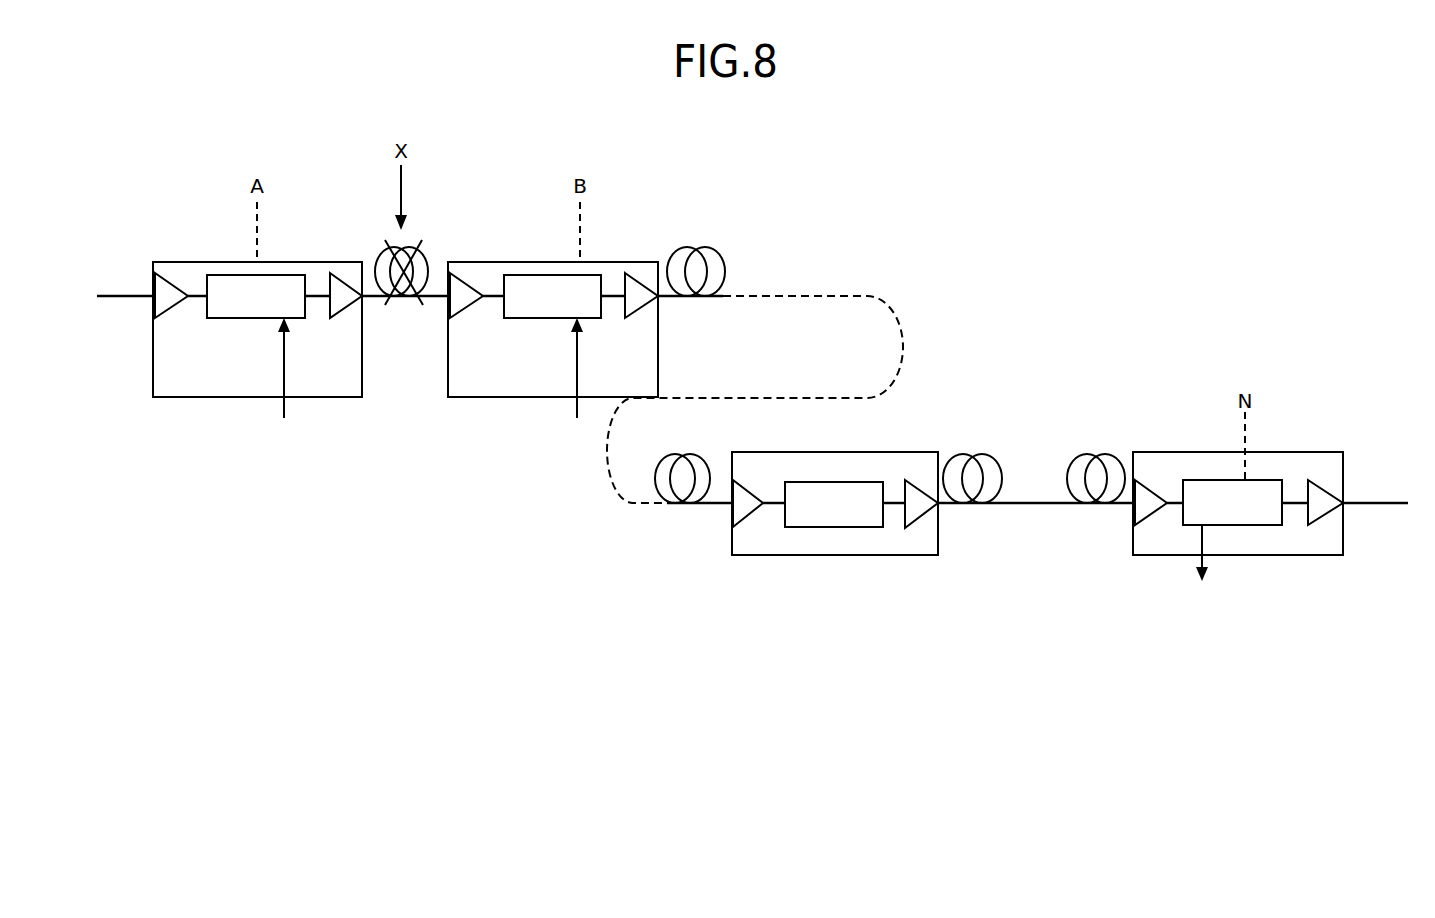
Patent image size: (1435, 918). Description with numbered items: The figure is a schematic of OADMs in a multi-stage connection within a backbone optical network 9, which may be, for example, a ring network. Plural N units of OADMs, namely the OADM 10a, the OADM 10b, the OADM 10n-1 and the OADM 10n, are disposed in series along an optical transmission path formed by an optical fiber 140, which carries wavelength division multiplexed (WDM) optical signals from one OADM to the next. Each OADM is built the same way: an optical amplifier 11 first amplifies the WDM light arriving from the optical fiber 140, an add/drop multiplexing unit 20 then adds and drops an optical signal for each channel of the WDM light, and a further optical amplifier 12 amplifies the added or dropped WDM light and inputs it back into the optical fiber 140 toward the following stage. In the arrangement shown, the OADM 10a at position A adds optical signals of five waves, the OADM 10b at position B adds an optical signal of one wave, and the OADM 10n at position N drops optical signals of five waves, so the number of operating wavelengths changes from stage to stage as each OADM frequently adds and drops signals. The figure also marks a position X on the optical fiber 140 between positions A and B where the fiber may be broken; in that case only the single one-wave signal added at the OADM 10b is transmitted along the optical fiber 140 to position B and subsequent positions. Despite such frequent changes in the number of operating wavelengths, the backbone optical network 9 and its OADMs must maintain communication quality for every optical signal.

The backbone optical network 9 is at (1024, 212).
The optical fiber 140 is at (106, 294).
The optical amplifier 11 is at (170, 273).
The add/drop multiplexing unit 20 is at (218, 275).
The optical amplifier 12 is at (350, 273).
The OADM 10a is at (300, 262).
The OADM 10b is at (599, 262).
The OADM 10n-1 is at (866, 452).
The OADM 10n is at (1290, 452).